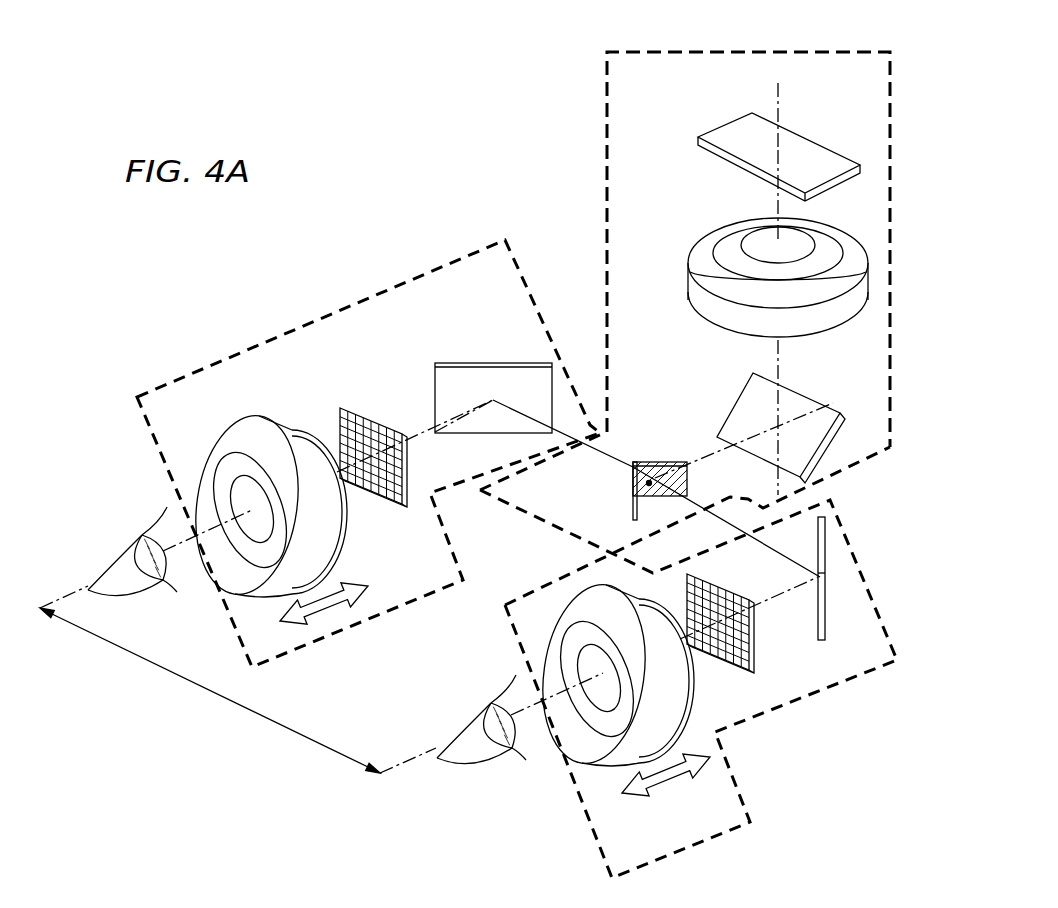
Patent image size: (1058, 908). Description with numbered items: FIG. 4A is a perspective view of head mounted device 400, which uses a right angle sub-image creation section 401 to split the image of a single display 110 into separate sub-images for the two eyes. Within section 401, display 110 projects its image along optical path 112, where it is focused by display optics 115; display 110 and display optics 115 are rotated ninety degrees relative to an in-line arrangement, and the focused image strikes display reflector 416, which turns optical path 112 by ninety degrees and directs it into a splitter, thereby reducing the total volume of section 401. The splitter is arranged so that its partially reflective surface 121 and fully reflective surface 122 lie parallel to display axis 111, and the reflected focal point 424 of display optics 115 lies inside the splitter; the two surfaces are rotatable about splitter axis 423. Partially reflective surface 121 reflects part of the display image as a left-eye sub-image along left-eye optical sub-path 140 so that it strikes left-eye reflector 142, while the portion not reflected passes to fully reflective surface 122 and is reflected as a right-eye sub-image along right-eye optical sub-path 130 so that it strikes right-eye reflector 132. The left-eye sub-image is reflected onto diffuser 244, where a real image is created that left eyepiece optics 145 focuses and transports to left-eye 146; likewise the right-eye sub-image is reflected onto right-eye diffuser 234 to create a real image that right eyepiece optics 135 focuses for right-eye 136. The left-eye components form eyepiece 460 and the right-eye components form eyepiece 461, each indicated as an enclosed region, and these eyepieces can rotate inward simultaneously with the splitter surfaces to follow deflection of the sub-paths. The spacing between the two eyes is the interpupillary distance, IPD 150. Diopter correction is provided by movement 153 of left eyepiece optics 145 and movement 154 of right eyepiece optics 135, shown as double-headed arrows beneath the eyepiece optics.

The head mounted device 400 is at (206, 248).
The right angle sub-image creation section 401 is at (798, 52).
The eyepiece 460 is at (312, 317).
The eyepiece 461 is at (693, 843).
The right-eye optical sub-path 130 is at (712, 523).
The display 110 is at (805, 147).
The display axis 111 is at (777, 88).
The optical path 112 is at (777, 210).
The display optics 115 is at (705, 248).
The display reflector 416 is at (748, 398).
The splitter axis 423 is at (853, 390).
The reflected focal point 424 is at (649, 480).
The partially reflective surface 121 is at (688, 483).
The fully reflective surface 122 is at (633, 515).
The left-eye optical sub-path 140 is at (620, 453).
The left-eye reflector 142 is at (435, 392).
The diffuser 244 is at (343, 407).
The left eyepiece optics 145 is at (240, 423).
The left-eye 146 is at (125, 563).
The movement 153 is at (363, 582).
The IPD 150 is at (213, 694).
The right-eye 136 is at (477, 757).
The right eyepiece optics 135 is at (693, 682).
The right-eye diffuser 234 is at (750, 657).
The right-eye reflector 132 is at (825, 613).
The movement 154 is at (672, 787).